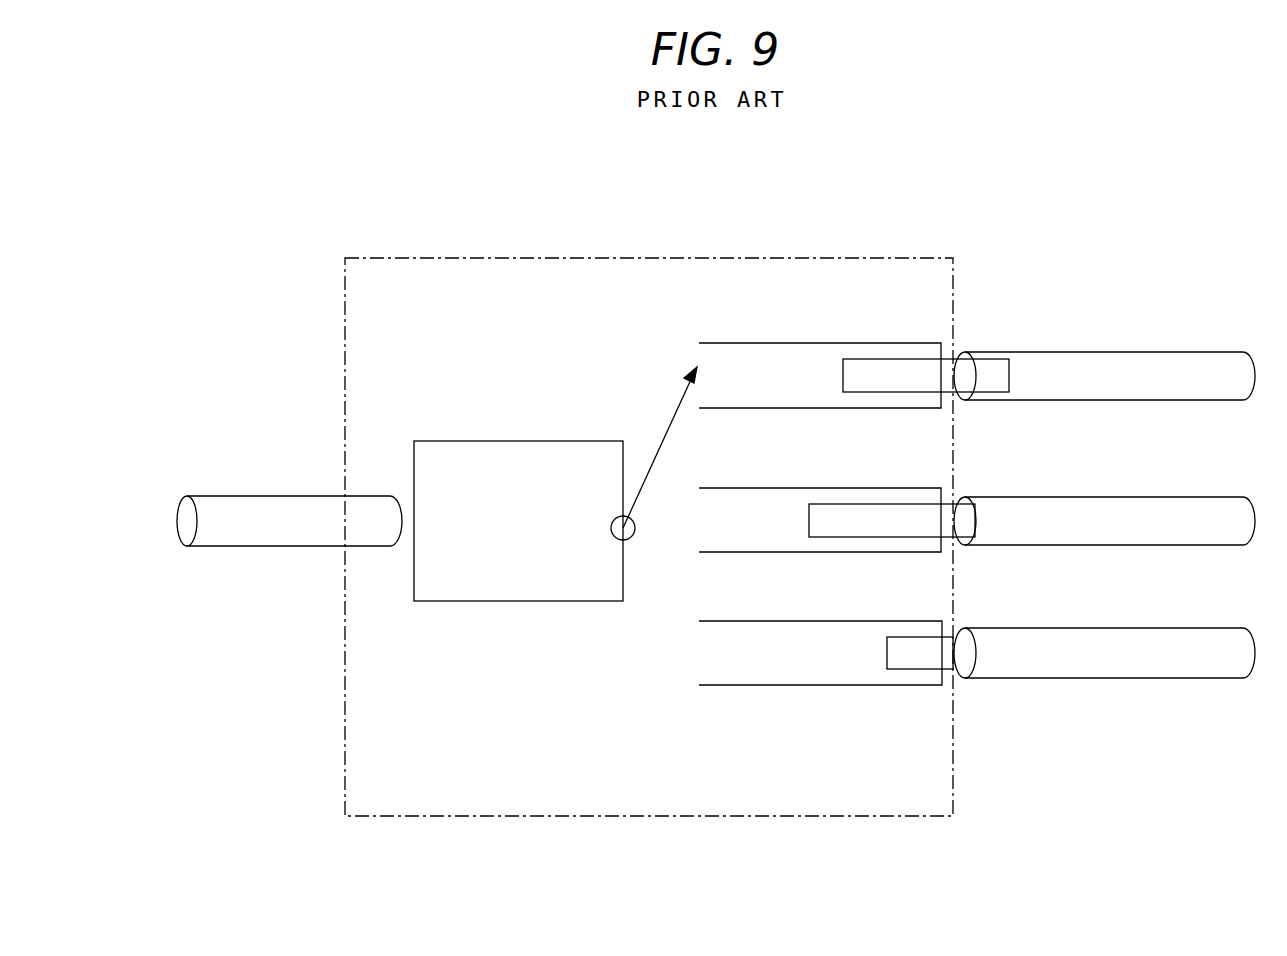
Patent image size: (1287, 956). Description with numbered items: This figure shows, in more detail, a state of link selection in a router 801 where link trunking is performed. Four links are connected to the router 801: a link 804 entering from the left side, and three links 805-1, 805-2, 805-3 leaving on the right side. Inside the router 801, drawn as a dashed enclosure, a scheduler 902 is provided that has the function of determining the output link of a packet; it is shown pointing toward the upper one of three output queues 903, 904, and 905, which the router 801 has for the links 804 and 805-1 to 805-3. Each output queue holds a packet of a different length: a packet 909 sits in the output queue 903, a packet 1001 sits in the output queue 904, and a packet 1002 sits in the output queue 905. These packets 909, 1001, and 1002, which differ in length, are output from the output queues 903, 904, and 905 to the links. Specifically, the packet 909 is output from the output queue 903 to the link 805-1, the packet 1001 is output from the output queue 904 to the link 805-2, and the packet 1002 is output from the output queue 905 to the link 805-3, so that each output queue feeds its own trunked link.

The router 801 is at (565, 257).
The link 804 is at (225, 495).
The scheduler 902 is at (525, 440).
The output queue 903 is at (733, 342).
The output queue 904 is at (733, 487).
The output queue 905 is at (733, 620).
The packet 909 is at (867, 358).
The packet 1001 is at (857, 503).
The packet 1002 is at (900, 636).
The link 805-1 is at (1133, 351).
The link 805-2 is at (1133, 496).
The link 805-3 is at (1133, 627).